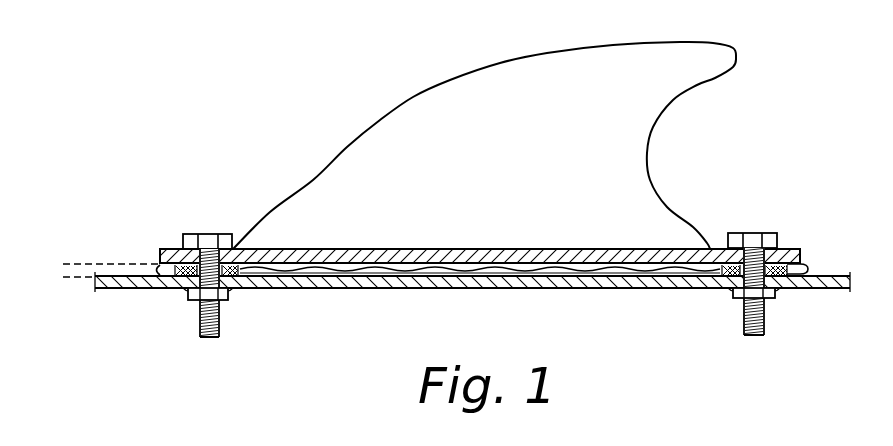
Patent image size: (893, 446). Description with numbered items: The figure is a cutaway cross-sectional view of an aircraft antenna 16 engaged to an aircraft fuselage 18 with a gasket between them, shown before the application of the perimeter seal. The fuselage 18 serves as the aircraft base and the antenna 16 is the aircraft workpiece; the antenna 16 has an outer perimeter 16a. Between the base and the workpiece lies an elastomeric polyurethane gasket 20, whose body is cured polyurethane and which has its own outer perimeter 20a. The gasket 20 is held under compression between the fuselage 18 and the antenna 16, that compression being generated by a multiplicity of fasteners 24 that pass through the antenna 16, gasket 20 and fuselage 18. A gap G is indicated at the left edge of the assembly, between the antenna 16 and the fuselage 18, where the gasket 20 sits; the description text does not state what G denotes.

The aircraft antenna 16 is at (672, 103).
The outer perimeter 16a is at (800, 247).
The fuselage 18 is at (597, 288).
The polyurethane gasket 20 is at (413, 275).
The outer perimeter 20a is at (807, 268).
The fasteners 24 is at (210, 338).
The gap G is at (62, 272).